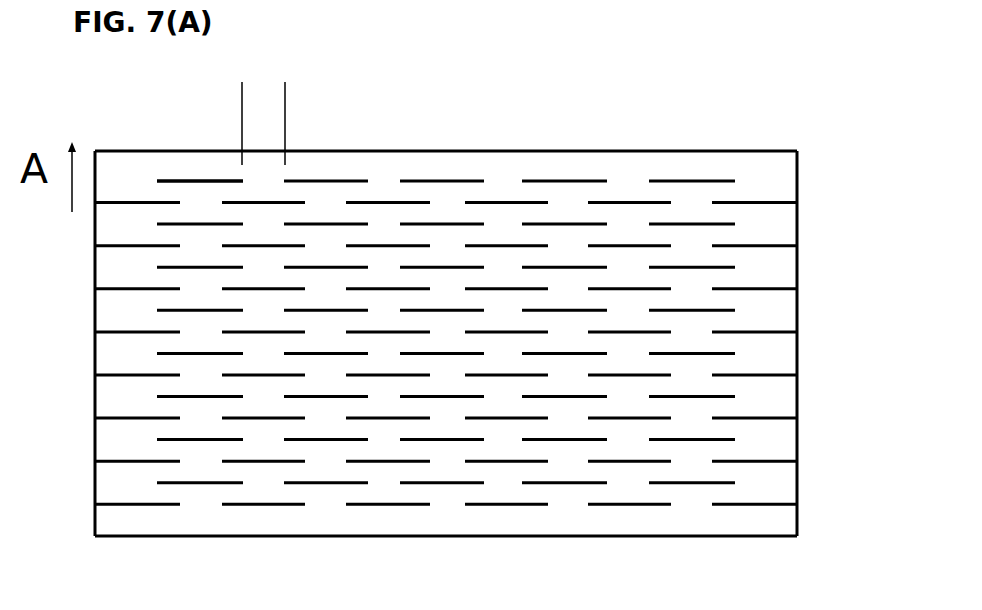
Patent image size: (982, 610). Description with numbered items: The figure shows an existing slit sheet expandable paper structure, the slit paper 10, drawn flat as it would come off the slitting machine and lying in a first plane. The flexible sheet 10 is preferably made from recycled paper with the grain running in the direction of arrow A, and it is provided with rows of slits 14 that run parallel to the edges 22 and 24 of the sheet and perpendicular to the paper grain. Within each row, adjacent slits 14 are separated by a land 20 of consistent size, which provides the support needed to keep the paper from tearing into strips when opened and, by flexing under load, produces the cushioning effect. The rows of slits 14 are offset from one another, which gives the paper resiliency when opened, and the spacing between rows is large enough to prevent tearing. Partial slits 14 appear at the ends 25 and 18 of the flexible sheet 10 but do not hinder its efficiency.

The slit paper 10 is at (382, 142).
The slits 14 is at (195, 178).
The end 18 is at (799, 313).
The land 20 is at (327, 102).
The edge 22 is at (524, 151).
The edge 24 is at (546, 538).
The end 25 is at (95, 331).